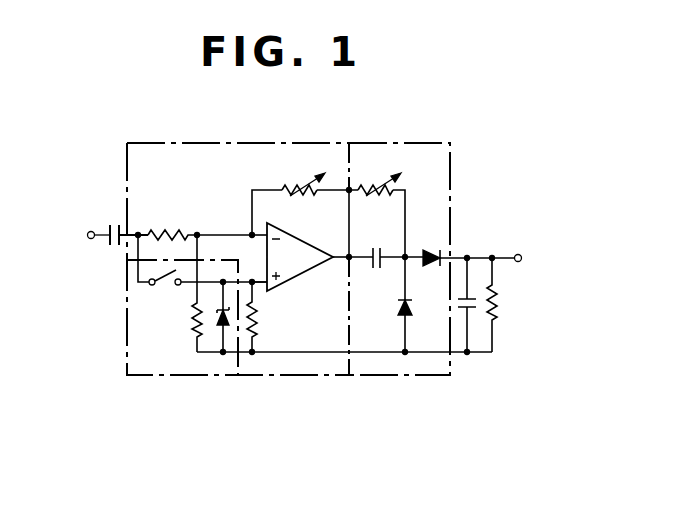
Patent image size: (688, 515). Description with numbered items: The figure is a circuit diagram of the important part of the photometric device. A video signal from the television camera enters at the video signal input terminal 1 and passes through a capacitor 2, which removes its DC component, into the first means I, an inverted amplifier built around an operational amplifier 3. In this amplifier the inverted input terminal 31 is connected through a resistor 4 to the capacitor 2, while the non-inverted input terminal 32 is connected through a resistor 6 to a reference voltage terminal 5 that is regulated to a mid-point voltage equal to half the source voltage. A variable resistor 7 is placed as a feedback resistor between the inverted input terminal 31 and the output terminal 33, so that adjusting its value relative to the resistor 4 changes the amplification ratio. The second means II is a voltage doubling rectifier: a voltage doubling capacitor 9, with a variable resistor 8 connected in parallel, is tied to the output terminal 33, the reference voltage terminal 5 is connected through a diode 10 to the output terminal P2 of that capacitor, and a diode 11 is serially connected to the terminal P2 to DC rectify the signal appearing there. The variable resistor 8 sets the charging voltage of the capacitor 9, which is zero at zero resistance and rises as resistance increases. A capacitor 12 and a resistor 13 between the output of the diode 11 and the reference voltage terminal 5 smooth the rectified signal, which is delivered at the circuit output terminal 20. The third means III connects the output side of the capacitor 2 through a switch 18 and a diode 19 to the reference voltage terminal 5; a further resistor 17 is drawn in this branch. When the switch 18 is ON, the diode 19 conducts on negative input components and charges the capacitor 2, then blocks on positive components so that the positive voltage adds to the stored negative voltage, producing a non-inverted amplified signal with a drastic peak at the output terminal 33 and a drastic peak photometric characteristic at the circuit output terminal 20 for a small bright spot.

The video signal input terminal 1 is at (89, 230).
The capacitor 2 is at (113, 224).
The operational amplifier 3 is at (313, 270).
The resistor 4 is at (168, 229).
The reference voltage terminal 5 is at (300, 353).
The resistor 6 is at (258, 324).
The variable resistor 7 is at (290, 185).
The variable resistor 8 is at (366, 186).
The voltage doubling capacitor 9 is at (377, 246).
The diode 10 is at (397, 308).
The diode 11 is at (431, 248).
The capacitor 12 is at (473, 310).
The resistor 13 is at (500, 306).
The resistor 17 is at (192, 322).
The switch 18 is at (162, 286).
The diode 19 is at (216, 320).
The circuit output terminal 20 is at (516, 252).
The inverted input terminal 31 is at (262, 236).
The non-inverted input terminal 32 is at (258, 286).
The output terminal 33 is at (347, 256).
The output terminal P2 is at (408, 262).
The first means I is at (160, 142).
The second means II is at (428, 142).
The third means III is at (222, 365).